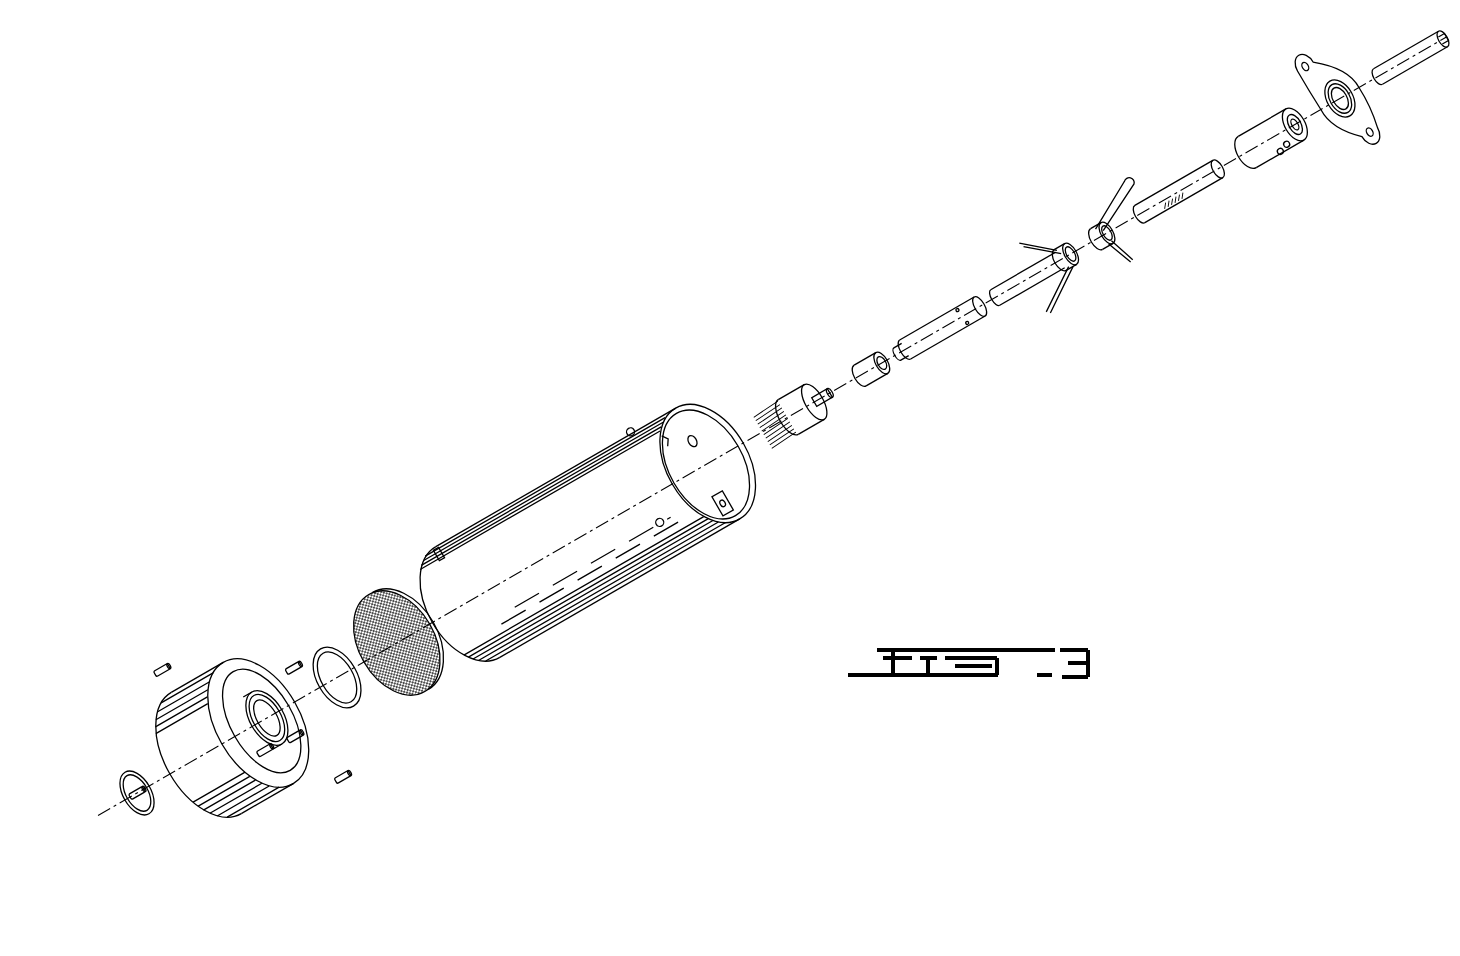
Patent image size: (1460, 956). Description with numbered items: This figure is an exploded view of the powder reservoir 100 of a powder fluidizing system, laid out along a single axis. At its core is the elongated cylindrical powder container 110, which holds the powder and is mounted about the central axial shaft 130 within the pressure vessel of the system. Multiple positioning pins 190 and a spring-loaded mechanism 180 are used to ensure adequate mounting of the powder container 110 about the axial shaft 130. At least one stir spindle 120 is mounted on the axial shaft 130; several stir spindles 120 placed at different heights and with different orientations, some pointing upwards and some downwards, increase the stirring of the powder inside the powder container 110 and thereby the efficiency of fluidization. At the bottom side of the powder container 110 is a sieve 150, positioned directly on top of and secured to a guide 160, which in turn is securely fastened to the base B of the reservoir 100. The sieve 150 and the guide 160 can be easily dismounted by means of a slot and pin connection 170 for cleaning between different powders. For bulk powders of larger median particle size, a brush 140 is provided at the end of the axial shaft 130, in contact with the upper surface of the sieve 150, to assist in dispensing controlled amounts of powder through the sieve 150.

The powder reservoir 100 is at (771, 438).
The powder container 110 is at (513, 527).
The stir spindle 120 is at (1110, 250).
The axial shaft 130 is at (937, 333).
The brush 140 is at (810, 430).
The sieve 150 is at (432, 683).
The guide 160 is at (283, 768).
The slot and pin connection 170 is at (253, 692).
The spring-loaded mechanism 180 is at (1200, 187).
The positioning pins 190 is at (298, 737).
The base B is at (190, 741).